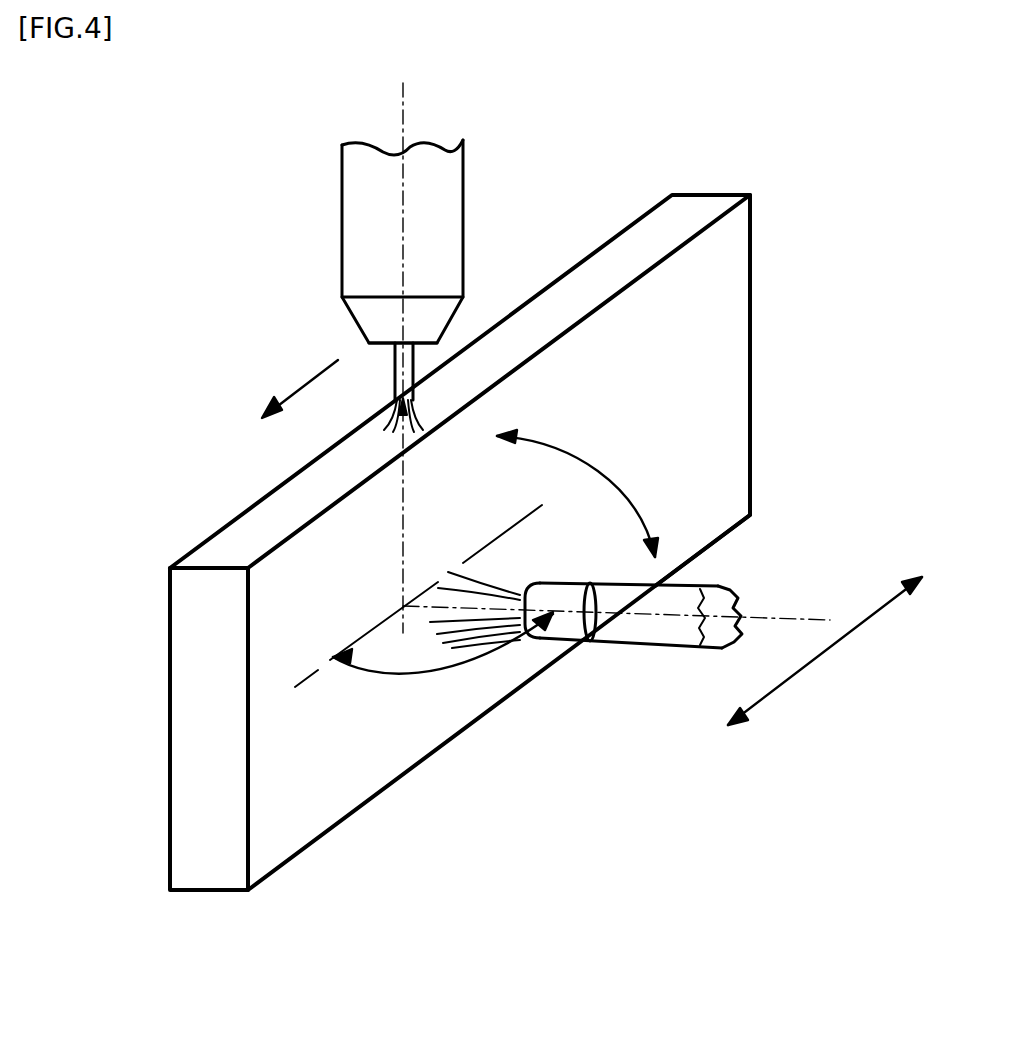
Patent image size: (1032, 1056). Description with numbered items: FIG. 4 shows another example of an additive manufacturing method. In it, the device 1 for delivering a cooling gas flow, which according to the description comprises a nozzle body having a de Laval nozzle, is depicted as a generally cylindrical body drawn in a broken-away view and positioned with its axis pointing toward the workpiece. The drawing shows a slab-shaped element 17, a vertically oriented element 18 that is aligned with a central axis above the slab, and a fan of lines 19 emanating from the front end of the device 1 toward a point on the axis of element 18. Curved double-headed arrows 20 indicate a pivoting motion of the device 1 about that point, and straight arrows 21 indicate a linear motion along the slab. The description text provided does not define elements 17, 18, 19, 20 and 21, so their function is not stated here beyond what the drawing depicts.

The device 1 is at (643, 633).
The workpiece block 17 is at (687, 337).
The nozzle 18 is at (450, 212).
The light beams 19 is at (487, 630).
The pivoting movement 20 is at (607, 478).
The translational movement 21 is at (303, 383).